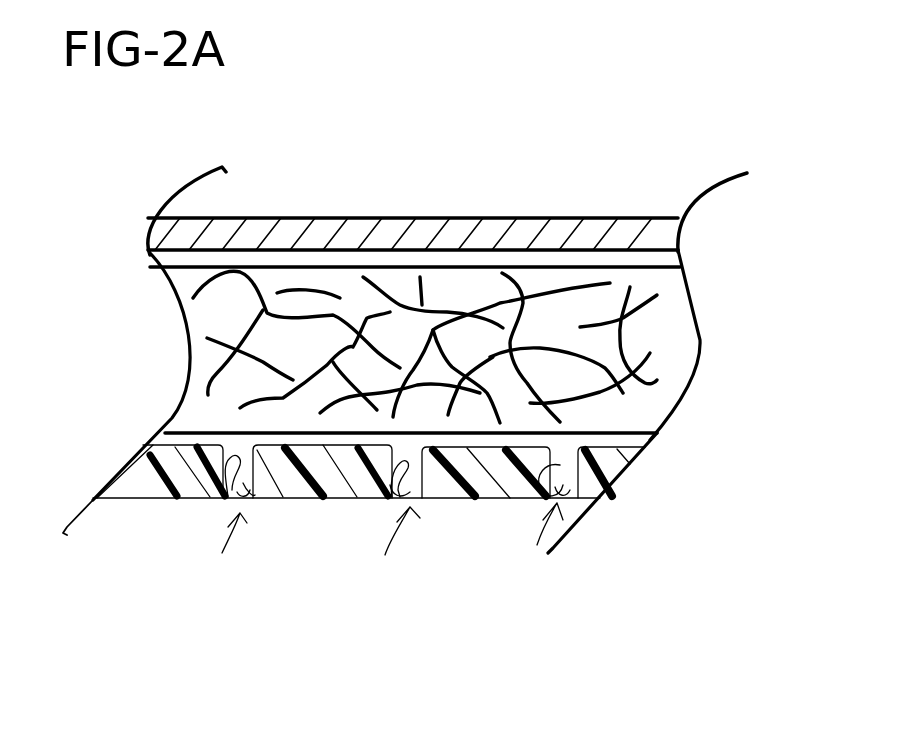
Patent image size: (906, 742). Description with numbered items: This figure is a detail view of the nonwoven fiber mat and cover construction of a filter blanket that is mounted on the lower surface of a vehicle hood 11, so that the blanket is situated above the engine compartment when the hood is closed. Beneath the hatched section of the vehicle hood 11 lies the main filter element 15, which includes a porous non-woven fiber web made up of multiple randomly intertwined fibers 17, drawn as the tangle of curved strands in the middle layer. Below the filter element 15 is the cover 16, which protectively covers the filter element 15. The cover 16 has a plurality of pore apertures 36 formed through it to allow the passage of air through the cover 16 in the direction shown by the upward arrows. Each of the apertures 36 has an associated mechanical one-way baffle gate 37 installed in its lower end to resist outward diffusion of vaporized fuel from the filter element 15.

The vehicle hood 11 is at (465, 202).
The main filter element 15 is at (680, 318).
The cover 16 is at (290, 497).
The fibers 17 is at (650, 372).
The pore apertures 36 is at (237, 456).
The mechanical one-way baffle gate 37 is at (362, 497).